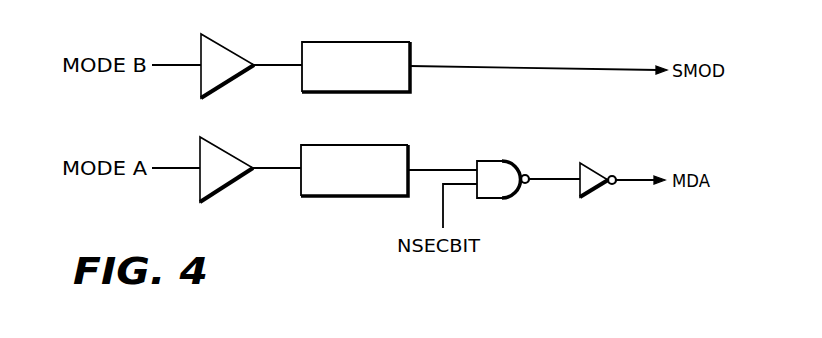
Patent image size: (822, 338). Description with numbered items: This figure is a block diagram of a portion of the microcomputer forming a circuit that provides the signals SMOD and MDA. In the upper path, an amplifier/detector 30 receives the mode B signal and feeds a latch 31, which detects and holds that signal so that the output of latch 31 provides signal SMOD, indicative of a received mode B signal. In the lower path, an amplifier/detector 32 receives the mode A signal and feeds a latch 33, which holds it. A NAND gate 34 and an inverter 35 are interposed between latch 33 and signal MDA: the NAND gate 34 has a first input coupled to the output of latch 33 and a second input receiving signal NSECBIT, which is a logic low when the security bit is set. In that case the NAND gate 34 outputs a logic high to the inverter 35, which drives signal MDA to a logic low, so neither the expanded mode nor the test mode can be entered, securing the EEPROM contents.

The amplifier/detector 30 is at (237, 52).
The latch 31 is at (368, 42).
The amplifier/detector 32 is at (238, 157).
The latch 33 is at (363, 146).
The NAND gate 34 is at (516, 153).
The inverter 35 is at (600, 167).